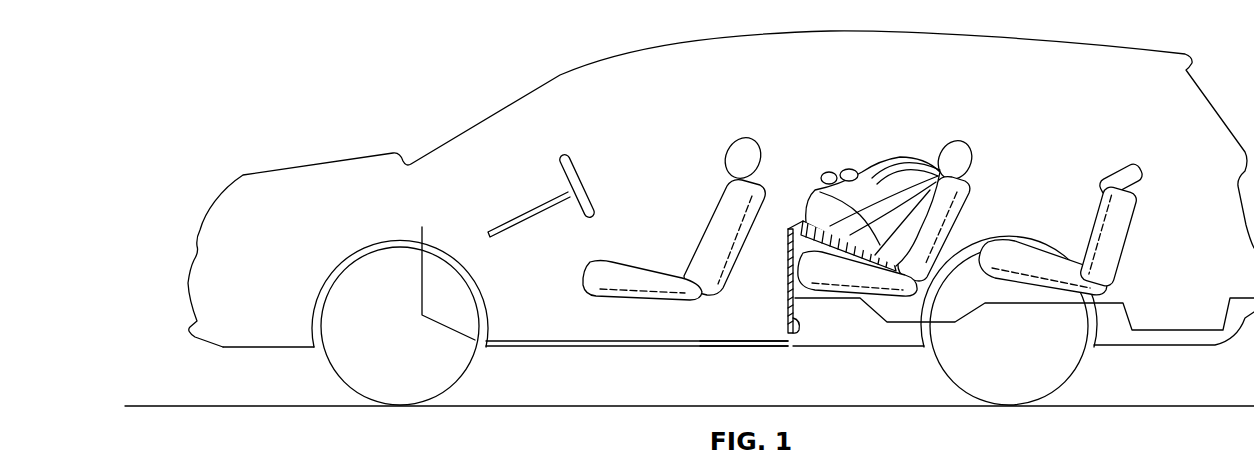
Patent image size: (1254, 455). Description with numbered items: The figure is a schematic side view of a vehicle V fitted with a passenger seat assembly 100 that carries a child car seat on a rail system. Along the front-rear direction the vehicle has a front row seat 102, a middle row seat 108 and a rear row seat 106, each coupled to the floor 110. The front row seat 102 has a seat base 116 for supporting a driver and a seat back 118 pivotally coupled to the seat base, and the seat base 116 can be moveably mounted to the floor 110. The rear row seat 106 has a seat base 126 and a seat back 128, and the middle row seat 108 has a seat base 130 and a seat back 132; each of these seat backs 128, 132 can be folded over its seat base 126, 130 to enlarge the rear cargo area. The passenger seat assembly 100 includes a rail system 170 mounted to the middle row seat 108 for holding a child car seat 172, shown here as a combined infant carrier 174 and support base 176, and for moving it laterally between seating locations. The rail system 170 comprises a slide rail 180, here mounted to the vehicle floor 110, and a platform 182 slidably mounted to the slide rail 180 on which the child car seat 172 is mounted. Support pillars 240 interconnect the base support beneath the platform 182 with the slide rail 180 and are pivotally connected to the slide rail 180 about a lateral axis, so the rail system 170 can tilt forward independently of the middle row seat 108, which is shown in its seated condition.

The vehicle V is at (1116, 38).
The passenger seat assembly 100 is at (854, 170).
The front row seat 102 is at (643, 208).
The rear row seat 106 is at (997, 227).
The middle row seat 108 is at (959, 128).
The floor 110 is at (768, 348).
The seat base 116 is at (598, 283).
The seat back 118 is at (722, 230).
The seat base 126 is at (1047, 266).
The seat back 128 is at (1115, 214).
The seat base 130 is at (886, 292).
The seat back 132 is at (942, 200).
The rail system 170 is at (780, 245).
The child car seat 172 is at (890, 165).
The infant carrier 174 is at (876, 172).
The support base 176 is at (803, 223).
The slide rail 180 is at (797, 314).
The platform 182 is at (786, 222).
The support pillars 240 is at (788, 283).